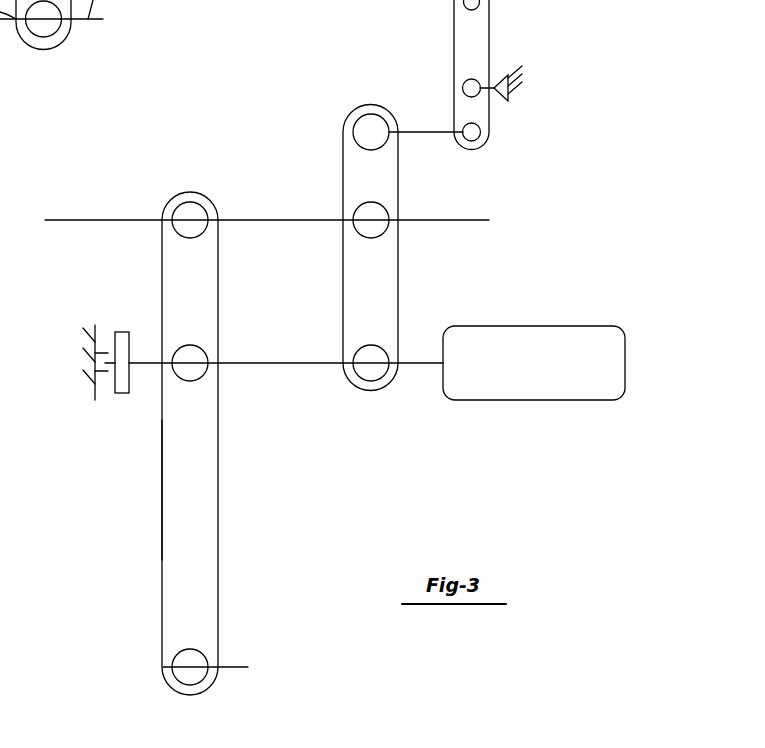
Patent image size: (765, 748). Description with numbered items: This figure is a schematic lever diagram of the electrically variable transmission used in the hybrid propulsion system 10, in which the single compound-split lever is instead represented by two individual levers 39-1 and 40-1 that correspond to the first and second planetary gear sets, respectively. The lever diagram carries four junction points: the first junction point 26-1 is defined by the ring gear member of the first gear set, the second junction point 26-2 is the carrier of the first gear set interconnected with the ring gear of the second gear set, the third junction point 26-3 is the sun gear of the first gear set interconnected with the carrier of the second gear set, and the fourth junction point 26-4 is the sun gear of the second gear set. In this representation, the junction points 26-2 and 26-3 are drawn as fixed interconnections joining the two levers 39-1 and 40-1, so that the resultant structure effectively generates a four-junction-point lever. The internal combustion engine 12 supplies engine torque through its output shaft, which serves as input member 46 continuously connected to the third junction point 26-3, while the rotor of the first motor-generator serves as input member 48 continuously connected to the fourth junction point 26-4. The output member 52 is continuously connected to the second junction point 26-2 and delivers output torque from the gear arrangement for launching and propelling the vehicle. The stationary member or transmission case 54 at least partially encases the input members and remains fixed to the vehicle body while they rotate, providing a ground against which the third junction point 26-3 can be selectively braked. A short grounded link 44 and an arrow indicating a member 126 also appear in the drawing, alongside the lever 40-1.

The hybrid propulsion system 10 is at (220, 140).
The internal combustion engine 12 is at (521, 374).
The first junction point 26-1 is at (370, 120).
The second junction point 26-2 is at (280, 220).
The third junction point 26-3 is at (280, 365).
The fourth junction point 26-4 is at (178, 668).
The first individual lever 39-1 is at (435, 283).
The second individual lever 40-1 is at (246, 540).
The grounded link 44 is at (511, 36).
The input member 46 is at (415, 365).
The input member 48 is at (232, 667).
The output member 52 is at (92, 220).
The transmission case 54 is at (92, 396).
The link member 126 is at (126, 496).